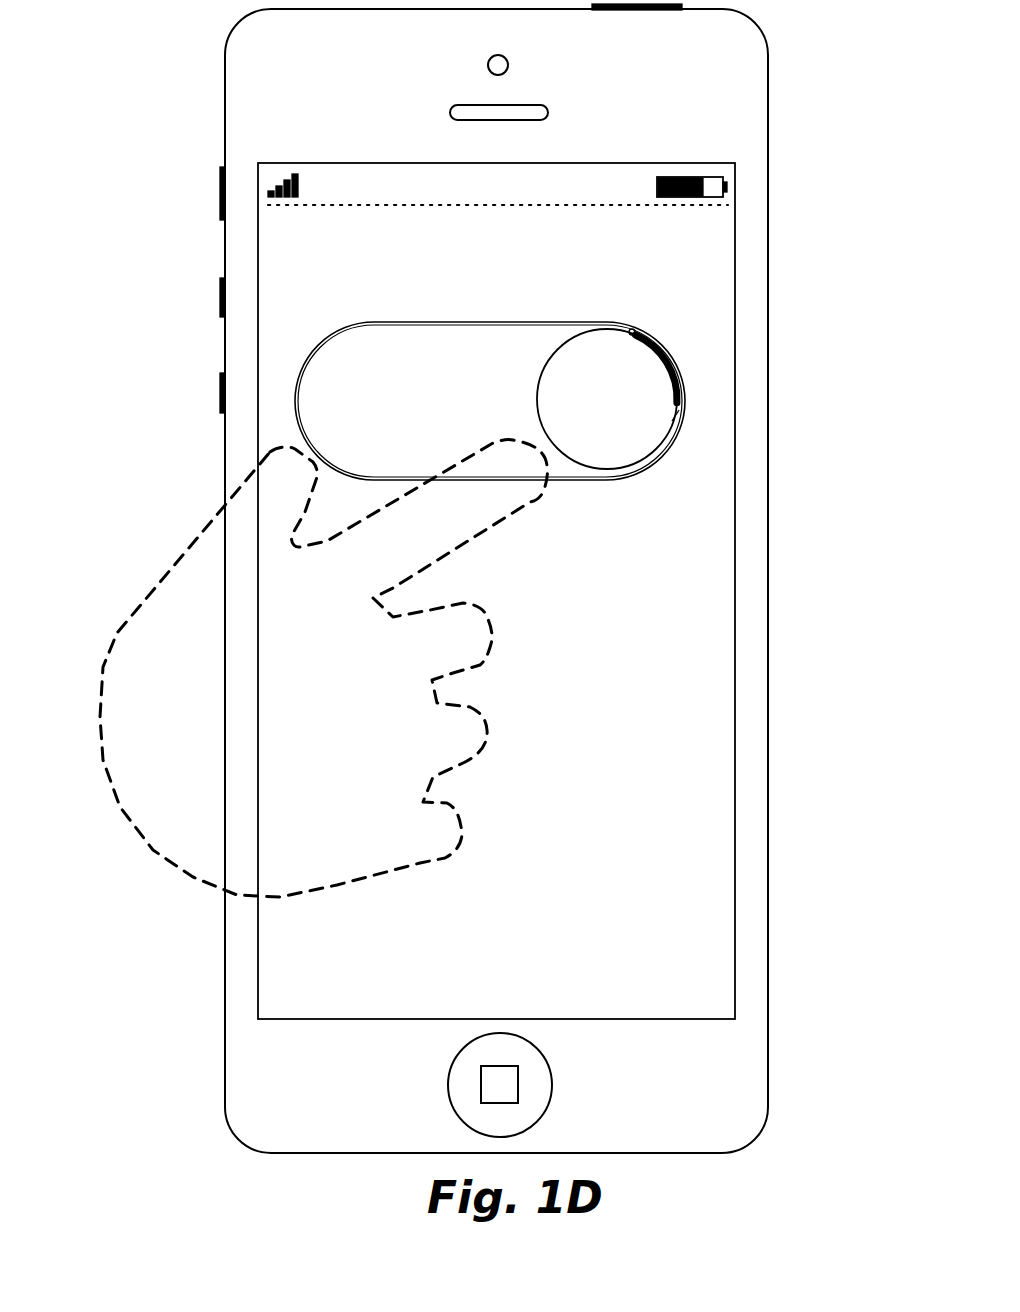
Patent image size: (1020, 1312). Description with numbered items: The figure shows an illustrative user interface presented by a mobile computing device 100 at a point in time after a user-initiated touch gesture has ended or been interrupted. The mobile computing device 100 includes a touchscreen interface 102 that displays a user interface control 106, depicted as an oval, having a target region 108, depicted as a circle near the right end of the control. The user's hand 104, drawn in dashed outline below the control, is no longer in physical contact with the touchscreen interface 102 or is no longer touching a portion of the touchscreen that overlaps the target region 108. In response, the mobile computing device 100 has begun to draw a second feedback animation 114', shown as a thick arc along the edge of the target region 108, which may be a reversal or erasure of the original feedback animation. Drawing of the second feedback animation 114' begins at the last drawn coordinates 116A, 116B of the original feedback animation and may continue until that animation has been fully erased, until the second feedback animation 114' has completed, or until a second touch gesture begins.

The mobile computing device 100 is at (225, 92).
The touchscreen interface 102 is at (735, 265).
The user's hand 104 is at (107, 642).
The user interface control 106 is at (493, 322).
The target region 108 is at (602, 350).
The second feedback animation 114' is at (750, 358).
The last drawn coordinate 116A is at (635, 331).
The last drawn coordinate 116B is at (677, 413).